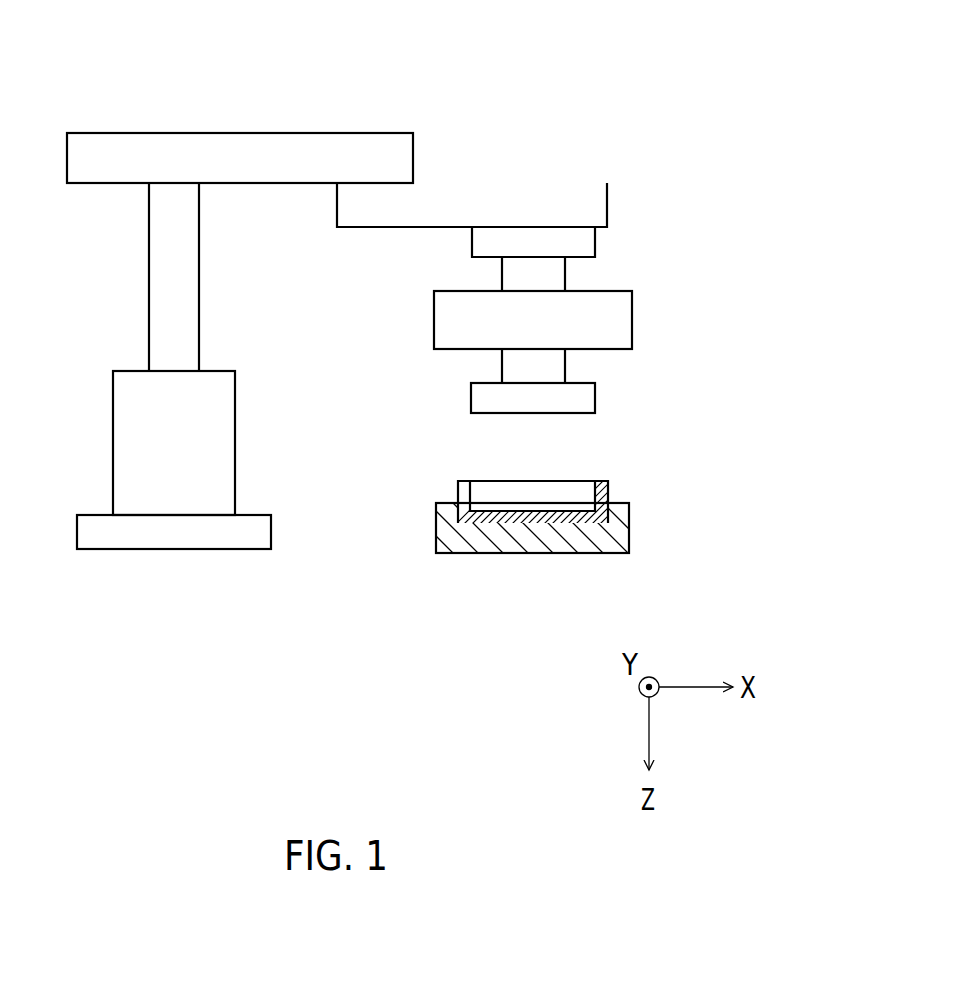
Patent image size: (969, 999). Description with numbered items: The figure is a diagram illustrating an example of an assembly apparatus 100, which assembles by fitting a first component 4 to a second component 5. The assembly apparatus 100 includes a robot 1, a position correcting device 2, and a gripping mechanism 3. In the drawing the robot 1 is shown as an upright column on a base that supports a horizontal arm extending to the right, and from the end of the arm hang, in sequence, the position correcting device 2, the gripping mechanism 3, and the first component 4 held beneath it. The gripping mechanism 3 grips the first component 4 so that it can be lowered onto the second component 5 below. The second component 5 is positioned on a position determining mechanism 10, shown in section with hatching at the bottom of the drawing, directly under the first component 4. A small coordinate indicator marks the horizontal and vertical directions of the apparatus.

The assembly apparatus 100 is at (602, 98).
The robot 1 is at (303, 133).
The position correcting device 2 is at (565, 277).
The gripping mechanism 3 is at (633, 310).
The first component 4 is at (595, 395).
The second component 5 is at (600, 481).
The position determining mechanism 10 is at (629, 537).